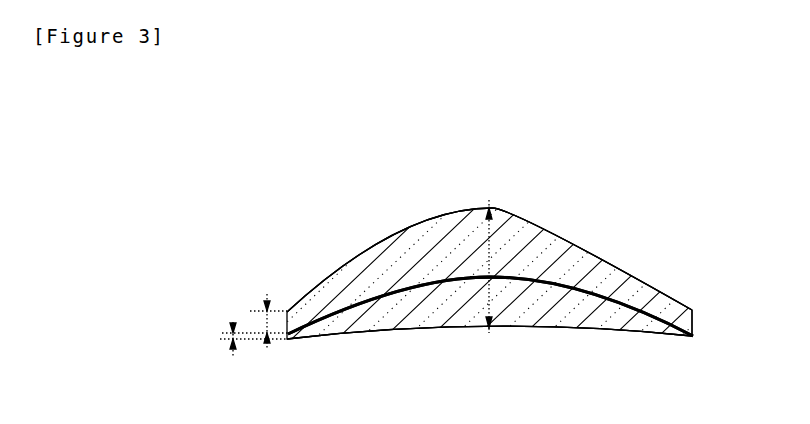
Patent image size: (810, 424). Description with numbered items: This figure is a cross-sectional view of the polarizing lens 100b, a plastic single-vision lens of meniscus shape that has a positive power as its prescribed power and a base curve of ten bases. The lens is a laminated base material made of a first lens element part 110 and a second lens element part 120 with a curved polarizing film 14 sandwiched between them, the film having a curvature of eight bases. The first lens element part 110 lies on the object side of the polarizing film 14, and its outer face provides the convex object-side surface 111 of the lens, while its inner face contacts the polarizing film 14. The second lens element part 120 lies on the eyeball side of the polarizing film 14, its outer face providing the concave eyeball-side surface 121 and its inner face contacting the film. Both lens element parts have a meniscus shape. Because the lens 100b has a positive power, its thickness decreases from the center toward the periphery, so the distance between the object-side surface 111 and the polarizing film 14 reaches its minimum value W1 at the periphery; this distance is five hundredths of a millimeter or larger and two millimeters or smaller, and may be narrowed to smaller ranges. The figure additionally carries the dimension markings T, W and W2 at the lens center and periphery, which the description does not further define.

The polarizing lens 100b is at (455, 140).
The first lens element part 110 is at (640, 280).
The object-side surface 111 is at (592, 236).
The second lens element part 120 is at (635, 330).
The eyeball-side surface 121 is at (573, 333).
The polarizing film 14 is at (680, 297).
The thickness T is at (490, 210).
The boundary width W is at (506, 281).
The minimum value of the distance between the object-side surface and the polarizing W1 is at (260, 322).
The second edge thickness W2 is at (226, 335).